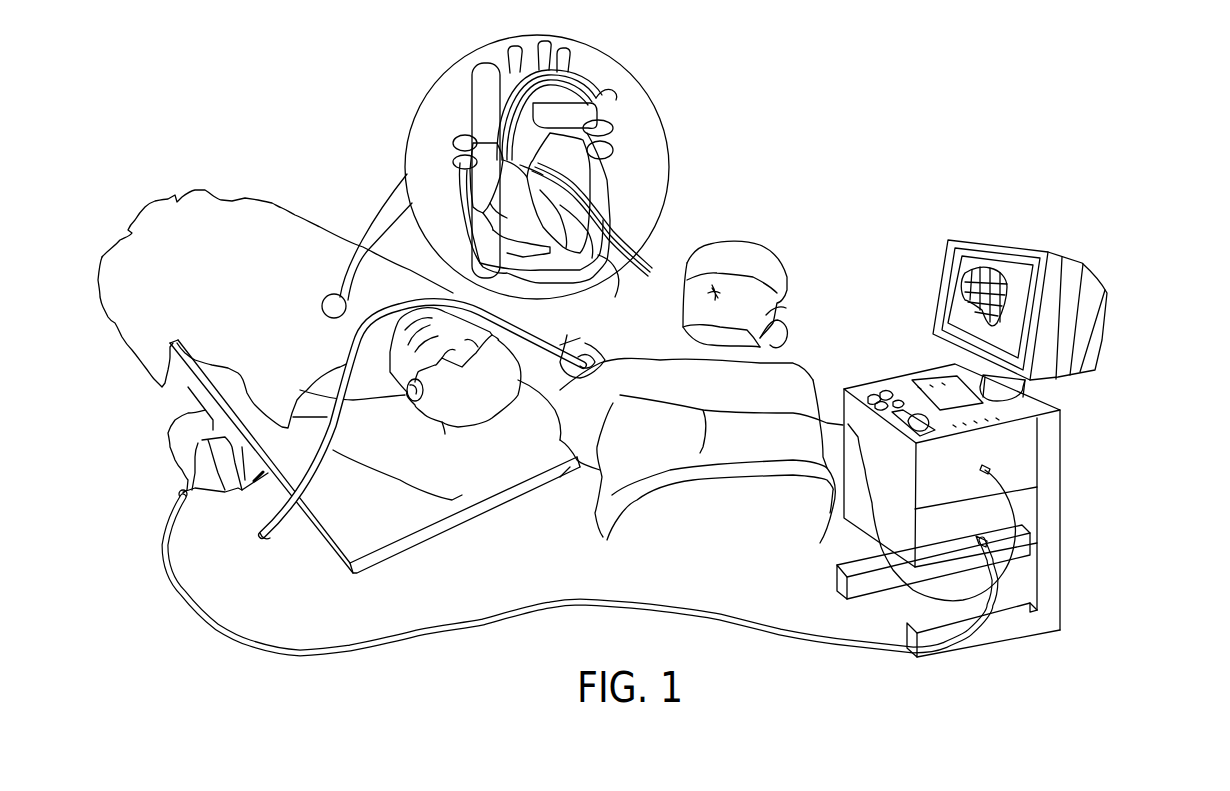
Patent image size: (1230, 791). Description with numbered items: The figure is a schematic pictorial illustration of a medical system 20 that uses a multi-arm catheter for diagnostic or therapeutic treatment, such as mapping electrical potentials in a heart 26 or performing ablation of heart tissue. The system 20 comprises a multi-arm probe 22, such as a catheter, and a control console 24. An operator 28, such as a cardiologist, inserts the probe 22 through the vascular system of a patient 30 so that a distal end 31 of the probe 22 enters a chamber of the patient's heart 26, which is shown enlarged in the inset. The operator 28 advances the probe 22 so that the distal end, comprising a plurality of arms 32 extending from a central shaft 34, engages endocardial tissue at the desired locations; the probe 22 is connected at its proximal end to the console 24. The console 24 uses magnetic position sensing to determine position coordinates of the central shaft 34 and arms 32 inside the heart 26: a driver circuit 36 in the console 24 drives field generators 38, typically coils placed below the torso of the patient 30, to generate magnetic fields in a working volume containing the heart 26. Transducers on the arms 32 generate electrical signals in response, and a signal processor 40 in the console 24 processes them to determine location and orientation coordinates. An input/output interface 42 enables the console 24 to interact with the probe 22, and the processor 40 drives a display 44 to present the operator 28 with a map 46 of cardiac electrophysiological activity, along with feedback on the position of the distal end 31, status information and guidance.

The medical system 20 is at (903, 140).
The multi-arm probe 22 is at (573, 350).
The control console 24 is at (1140, 400).
The heart 26 is at (600, 137).
The operator 28 is at (793, 383).
The patient 30 is at (444, 430).
The distal end 31 is at (600, 258).
The arms 32 is at (600, 255).
The central shaft 34 is at (600, 163).
The driver circuit 36 is at (1028, 508).
The field generators 38 is at (245, 513).
The signal processor 40 is at (1027, 428).
The input/output interface 42 is at (982, 472).
The display 44 is at (1077, 268).
The map 46 is at (960, 305).